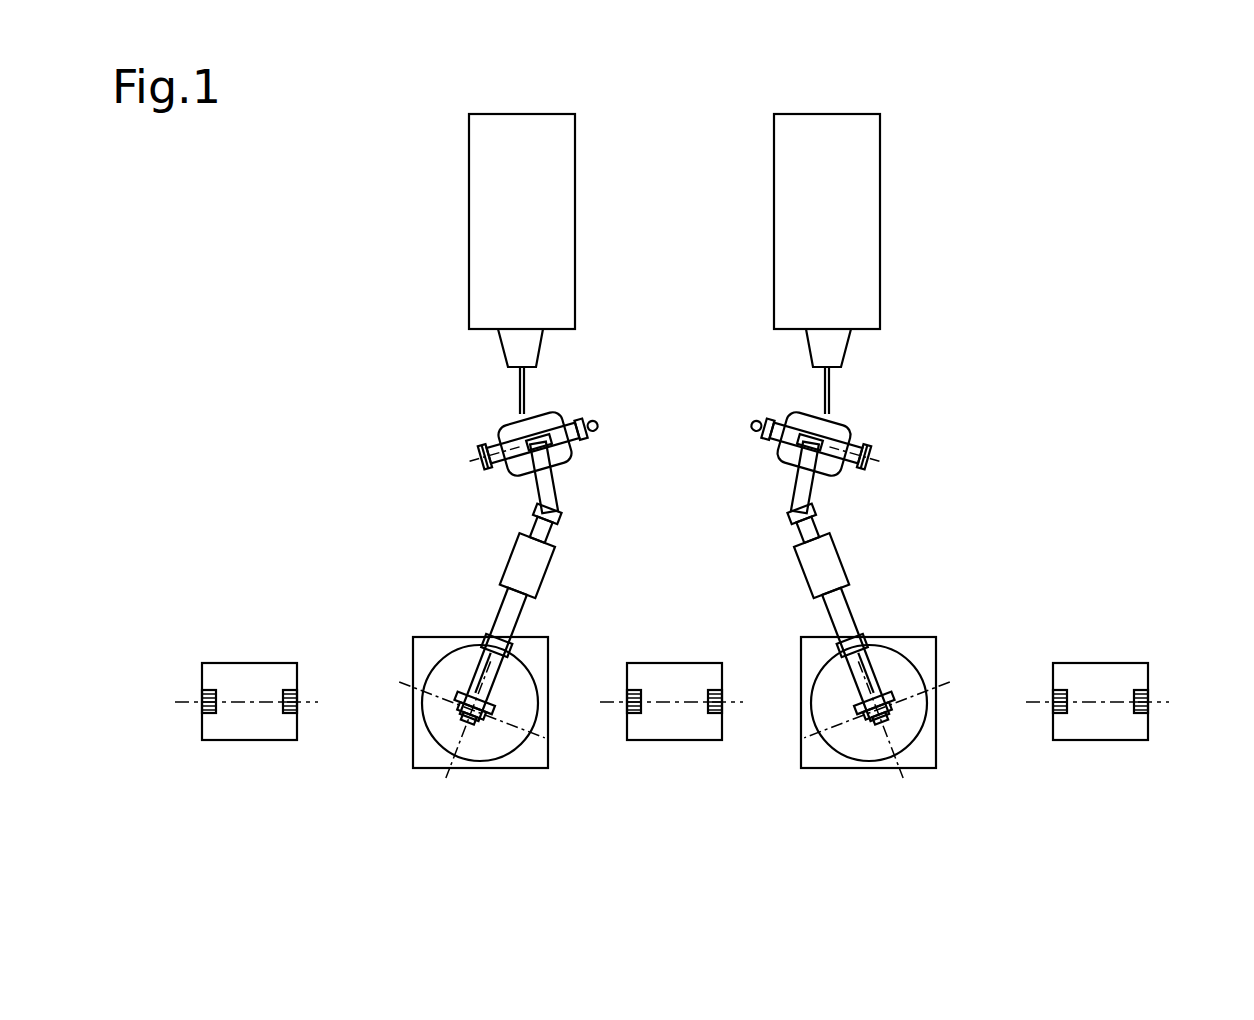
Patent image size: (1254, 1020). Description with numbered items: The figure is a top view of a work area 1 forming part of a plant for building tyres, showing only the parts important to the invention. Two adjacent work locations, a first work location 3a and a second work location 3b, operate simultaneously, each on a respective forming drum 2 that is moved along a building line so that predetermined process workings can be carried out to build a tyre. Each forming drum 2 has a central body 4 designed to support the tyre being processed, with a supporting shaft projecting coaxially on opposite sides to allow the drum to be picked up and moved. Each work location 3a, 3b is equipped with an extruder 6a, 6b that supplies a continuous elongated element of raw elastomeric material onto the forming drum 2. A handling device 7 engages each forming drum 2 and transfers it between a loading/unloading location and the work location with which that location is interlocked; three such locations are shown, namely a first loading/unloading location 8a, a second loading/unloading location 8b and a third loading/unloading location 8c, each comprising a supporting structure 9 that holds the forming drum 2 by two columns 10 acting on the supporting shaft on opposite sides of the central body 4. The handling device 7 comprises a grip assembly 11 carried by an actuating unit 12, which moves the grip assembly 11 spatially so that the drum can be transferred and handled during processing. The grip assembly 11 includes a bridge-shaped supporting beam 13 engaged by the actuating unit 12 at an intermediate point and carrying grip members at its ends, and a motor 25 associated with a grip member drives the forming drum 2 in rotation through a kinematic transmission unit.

The work area 1 is at (1002, 160).
The forming drum 2 is at (560, 402).
The first work location 3a is at (363, 280).
The second work location 3b is at (1015, 303).
The central body 4 is at (503, 423).
The extruder 6a is at (550, 162).
The extruder 6b is at (799, 162).
The handling device 7 is at (505, 513).
The first loading/unloading location 8a is at (261, 655).
The second loading/unloading location 8b is at (685, 655).
The third loading/unloading location 8c is at (1111, 655).
The supporting structure 9 is at (258, 728).
The column 10 is at (204, 707).
The grip assembly 11 is at (487, 443).
The actuating unit 12 is at (548, 657).
The bridge-shaped supporting beam 13 is at (577, 452).
The motor 25 is at (597, 428).